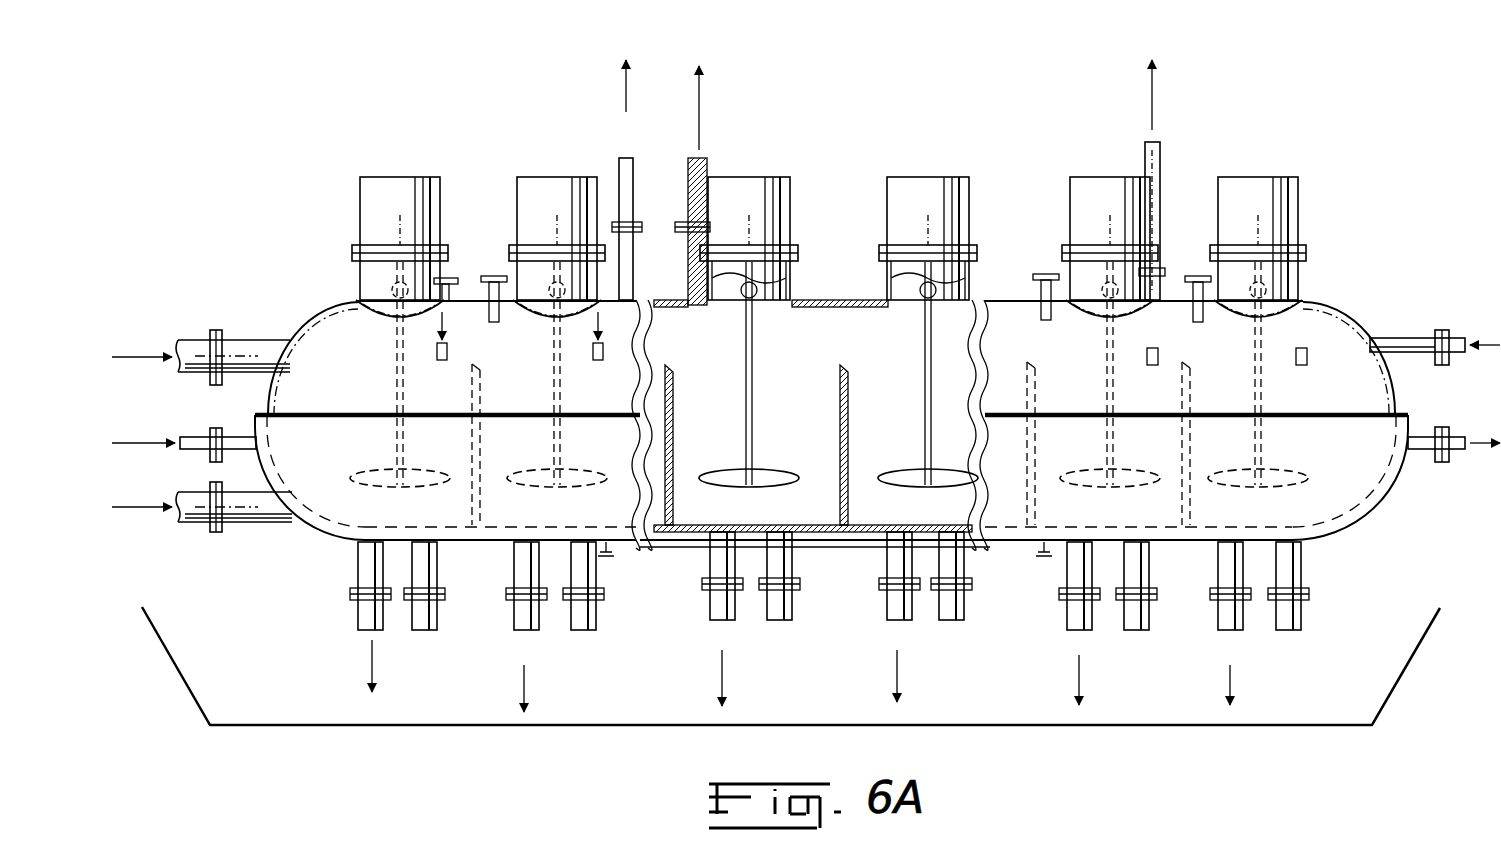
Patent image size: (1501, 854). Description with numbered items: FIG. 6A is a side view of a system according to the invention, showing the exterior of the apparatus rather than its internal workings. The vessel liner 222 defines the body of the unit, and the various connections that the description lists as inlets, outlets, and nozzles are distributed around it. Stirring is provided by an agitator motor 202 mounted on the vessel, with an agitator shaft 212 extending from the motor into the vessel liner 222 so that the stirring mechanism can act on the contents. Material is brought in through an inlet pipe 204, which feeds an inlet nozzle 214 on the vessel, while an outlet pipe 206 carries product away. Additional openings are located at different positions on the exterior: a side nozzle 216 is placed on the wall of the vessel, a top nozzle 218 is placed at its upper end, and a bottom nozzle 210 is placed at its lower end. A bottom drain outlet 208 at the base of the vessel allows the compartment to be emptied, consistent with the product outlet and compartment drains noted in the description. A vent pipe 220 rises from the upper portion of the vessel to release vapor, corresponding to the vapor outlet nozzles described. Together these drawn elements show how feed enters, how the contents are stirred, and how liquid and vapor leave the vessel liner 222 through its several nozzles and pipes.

The agitator motor 202 is at (356, 296).
The inlet pipe 204 is at (250, 340).
The outlet pipe 206 is at (1407, 338).
The bottom drain outlet 208 is at (360, 627).
The bottom nozzle 210 is at (436, 564).
The agitator shaft 212 is at (913, 298).
The inlet nozzle 214 is at (593, 352).
The side nozzle 216 is at (190, 438).
The top nozzle 218 is at (444, 276).
The vent pipe 220 is at (626, 160).
The vessel liner 222 is at (596, 527).